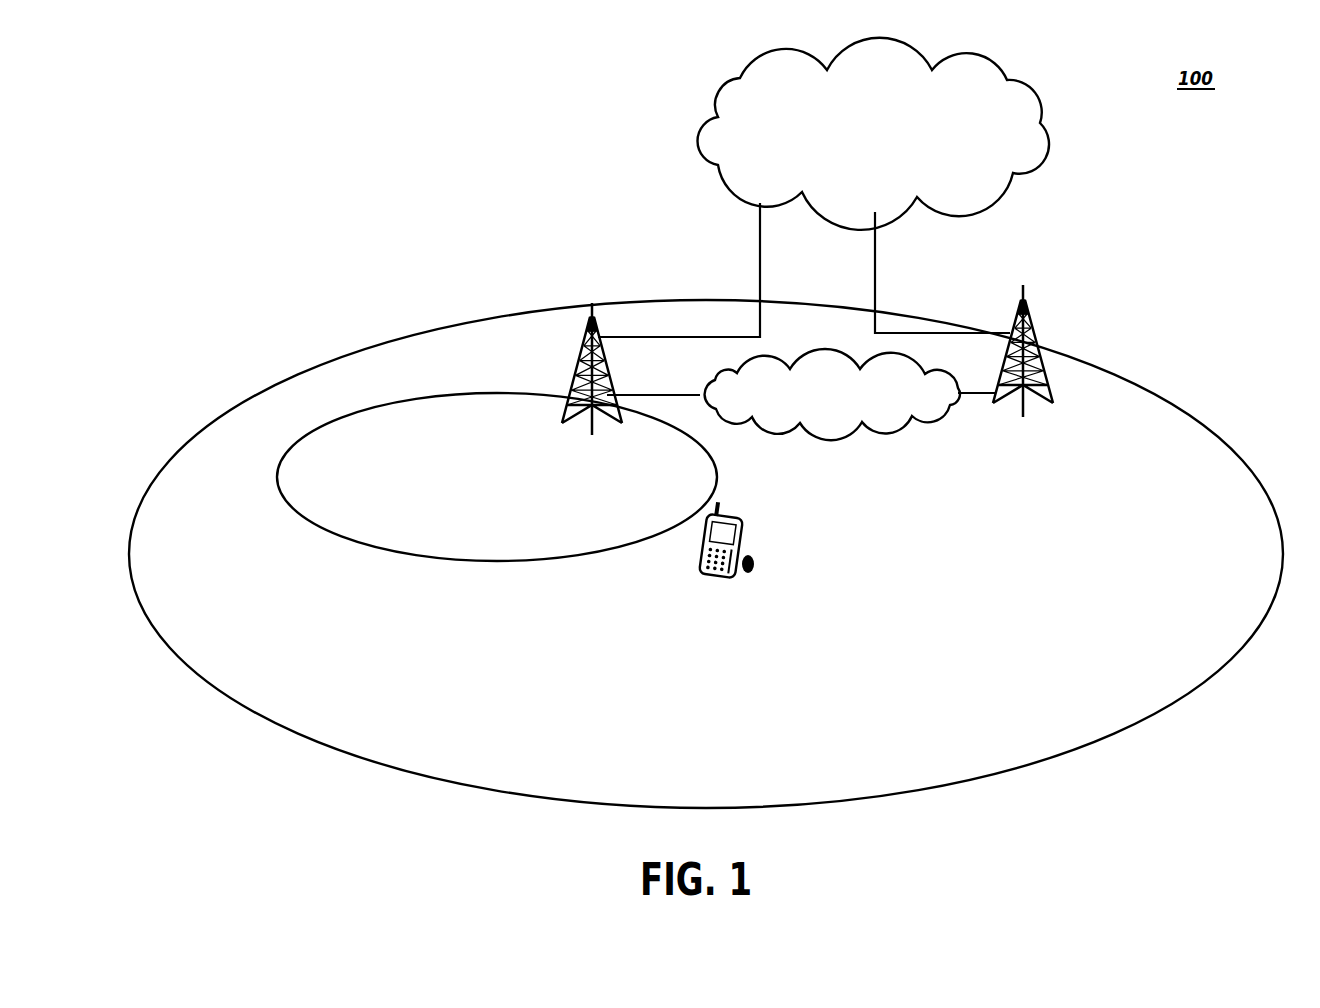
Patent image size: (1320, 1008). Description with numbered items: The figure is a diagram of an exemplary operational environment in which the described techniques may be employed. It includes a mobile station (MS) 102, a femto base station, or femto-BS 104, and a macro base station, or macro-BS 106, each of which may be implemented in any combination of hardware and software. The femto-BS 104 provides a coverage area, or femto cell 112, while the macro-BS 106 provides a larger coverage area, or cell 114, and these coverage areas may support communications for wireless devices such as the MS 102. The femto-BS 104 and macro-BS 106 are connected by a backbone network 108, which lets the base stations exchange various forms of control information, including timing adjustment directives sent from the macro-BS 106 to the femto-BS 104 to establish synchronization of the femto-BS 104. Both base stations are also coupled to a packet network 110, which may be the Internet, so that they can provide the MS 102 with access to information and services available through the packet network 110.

The mobile station 102 is at (742, 503).
The femto base station 104 is at (594, 322).
The macro base station 106 is at (1025, 310).
The backbone network 108 is at (786, 375).
The packet network 110 is at (1058, 107).
The coverage area (femto cell) 112 is at (437, 397).
The coverage area (cell) 114 is at (1135, 388).